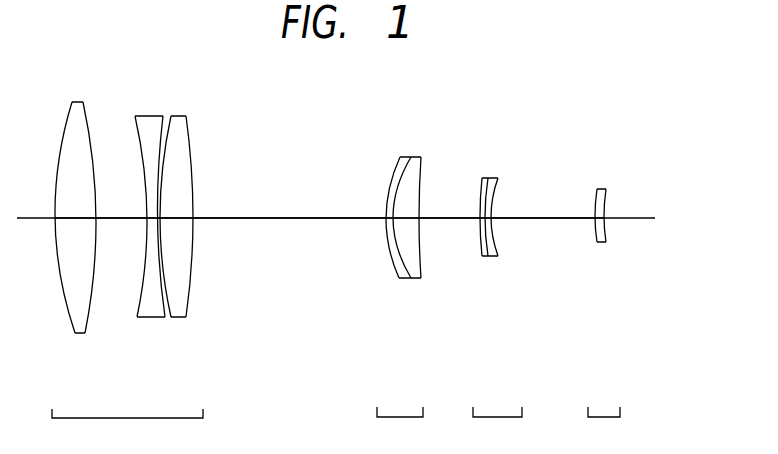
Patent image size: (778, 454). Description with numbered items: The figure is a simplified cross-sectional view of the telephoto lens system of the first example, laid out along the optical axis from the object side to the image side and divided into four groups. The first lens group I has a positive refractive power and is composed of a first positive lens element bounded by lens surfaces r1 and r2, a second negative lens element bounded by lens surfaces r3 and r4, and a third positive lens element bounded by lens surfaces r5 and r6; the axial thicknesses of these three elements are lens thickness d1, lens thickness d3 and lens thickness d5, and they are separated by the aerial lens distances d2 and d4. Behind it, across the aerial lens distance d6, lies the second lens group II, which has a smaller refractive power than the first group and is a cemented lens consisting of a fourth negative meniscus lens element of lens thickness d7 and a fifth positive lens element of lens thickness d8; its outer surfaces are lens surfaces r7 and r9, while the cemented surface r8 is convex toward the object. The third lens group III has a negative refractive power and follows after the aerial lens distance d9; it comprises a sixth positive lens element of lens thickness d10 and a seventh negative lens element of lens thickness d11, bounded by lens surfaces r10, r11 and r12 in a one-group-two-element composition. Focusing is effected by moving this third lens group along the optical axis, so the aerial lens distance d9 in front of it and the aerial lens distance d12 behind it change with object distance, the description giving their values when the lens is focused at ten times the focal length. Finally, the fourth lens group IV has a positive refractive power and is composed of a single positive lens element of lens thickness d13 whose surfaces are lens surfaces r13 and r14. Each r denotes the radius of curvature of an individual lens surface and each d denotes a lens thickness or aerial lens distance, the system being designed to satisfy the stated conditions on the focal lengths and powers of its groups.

The radius of curvature of first lens surface r1 is at (67, 121).
The radius of curvature of second lens surface r2 is at (88, 118).
The radius of curvature of third lens surface r3 is at (135, 122).
The radius of curvature of fourth lens surface r4 is at (163, 127).
The radius of curvature of fifth lens surface r5 is at (168, 126).
The radius of curvature of sixth lens surface r6 is at (187, 122).
The radius of curvature of seventh lens surface r7 is at (392, 178).
The radius of curvature of eighth lens surface r8 is at (403, 160).
The radius of curvature of ninth lens surface r9 is at (422, 158).
The radius of curvature of tenth lens surface r10 is at (480, 188).
The radius of curvature of eleventh lens surface r11 is at (487, 175).
The radius of curvature of twelfth lens surface r12 is at (498, 182).
The radius of curvature of thirteenth lens surface r13 is at (597, 193).
The radius of curvature of fourteenth lens surface r14 is at (606, 193).
The lens thickness d1 is at (77, 218).
The aerial lens distance d2 is at (115, 218).
The lens thickness d3 is at (154, 218).
The aerial lens distance d4 is at (162, 218).
The lens thickness d5 is at (183, 218).
The aerial lens distance d6 is at (268, 218).
The lens thickness d7 is at (389, 220).
The lens thickness d8 is at (408, 218).
The aerial lens distance d9 is at (447, 218).
The lens thickness d10 is at (483, 222).
The lens thickness d11 is at (496, 225).
The aerial lens distance d12 is at (553, 218).
The lens thickness d13 is at (600, 222).
The first lens group I is at (127, 427).
The second lens group II is at (400, 426).
The third lens group III is at (497, 426).
The fourth lens group IV is at (604, 426).